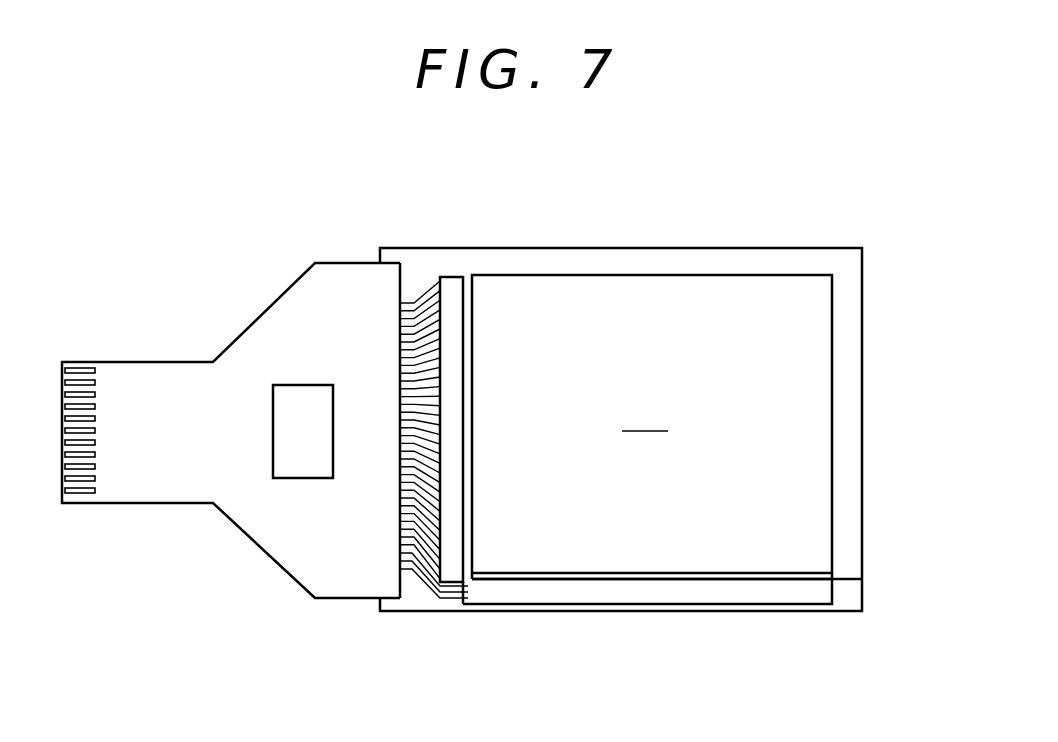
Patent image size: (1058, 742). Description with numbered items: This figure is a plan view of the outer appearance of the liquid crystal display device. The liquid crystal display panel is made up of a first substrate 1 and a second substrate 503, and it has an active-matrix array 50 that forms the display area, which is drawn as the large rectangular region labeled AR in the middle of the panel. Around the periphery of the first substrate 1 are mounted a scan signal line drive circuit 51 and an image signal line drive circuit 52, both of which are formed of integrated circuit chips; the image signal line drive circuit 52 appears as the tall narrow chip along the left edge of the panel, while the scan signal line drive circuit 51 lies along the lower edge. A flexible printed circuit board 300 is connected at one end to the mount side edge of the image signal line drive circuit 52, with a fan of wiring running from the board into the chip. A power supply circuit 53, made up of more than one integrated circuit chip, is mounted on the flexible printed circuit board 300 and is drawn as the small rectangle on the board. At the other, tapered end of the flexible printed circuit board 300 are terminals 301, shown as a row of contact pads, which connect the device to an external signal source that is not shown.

The first substrate 1 is at (551, 612).
The active-matrix array 50 is at (805, 432).
The scan signal line drive circuit 51 is at (792, 590).
The second substrate 503 is at (651, 578).
The image signal line drive circuit 52 is at (452, 292).
The power supply circuit 53 is at (282, 465).
The flexible printed circuit board 300 is at (232, 363).
The terminals 301 is at (78, 500).
The display area AR is at (645, 414).